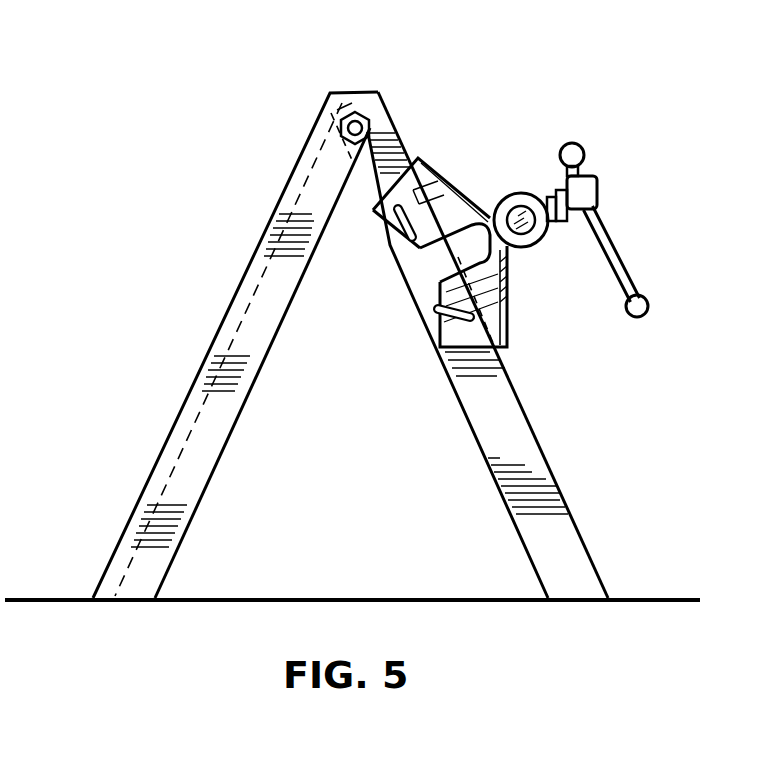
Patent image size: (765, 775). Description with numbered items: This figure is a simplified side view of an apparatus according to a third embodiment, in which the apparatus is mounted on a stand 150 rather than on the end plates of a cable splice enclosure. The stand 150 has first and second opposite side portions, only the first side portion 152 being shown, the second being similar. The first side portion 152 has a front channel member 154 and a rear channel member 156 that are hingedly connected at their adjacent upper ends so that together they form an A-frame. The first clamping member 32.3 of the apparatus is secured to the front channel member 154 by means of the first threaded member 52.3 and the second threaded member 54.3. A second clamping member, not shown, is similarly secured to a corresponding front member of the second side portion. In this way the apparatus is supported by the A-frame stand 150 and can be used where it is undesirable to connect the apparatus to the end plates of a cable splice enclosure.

The stand 150 is at (414, 104).
The first side portion 152 is at (252, 247).
The front channel member 154 is at (523, 438).
The rear channel member 156 is at (188, 440).
The first threaded member 52.3 is at (435, 223).
The second threaded member 54.3 is at (435, 312).
The first clamping member 32.3 is at (515, 310).